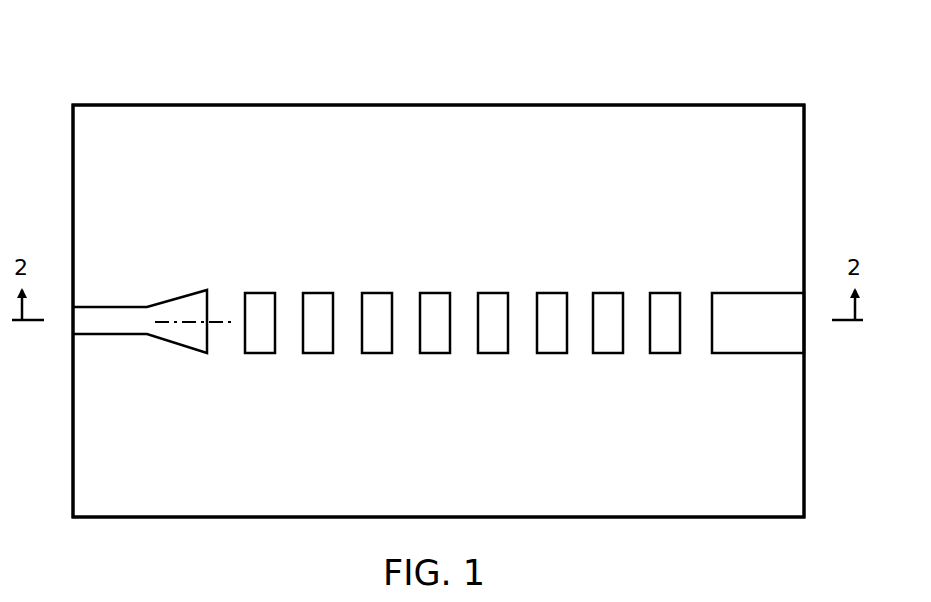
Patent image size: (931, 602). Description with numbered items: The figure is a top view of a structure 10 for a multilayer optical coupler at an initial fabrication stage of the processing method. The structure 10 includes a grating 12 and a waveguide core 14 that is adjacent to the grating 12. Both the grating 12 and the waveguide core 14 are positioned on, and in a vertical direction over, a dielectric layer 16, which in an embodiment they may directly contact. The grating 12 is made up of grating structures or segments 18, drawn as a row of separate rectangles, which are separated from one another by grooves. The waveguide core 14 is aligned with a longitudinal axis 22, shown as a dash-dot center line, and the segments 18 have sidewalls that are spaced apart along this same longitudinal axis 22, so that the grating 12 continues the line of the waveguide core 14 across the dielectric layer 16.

The structure 10 is at (125, 80).
The grating 12 is at (250, 270).
The waveguide core 14 is at (133, 322).
The dielectric layer 16 is at (770, 478).
The segments 18 is at (260, 338).
The longitudinal axis 22 is at (188, 323).